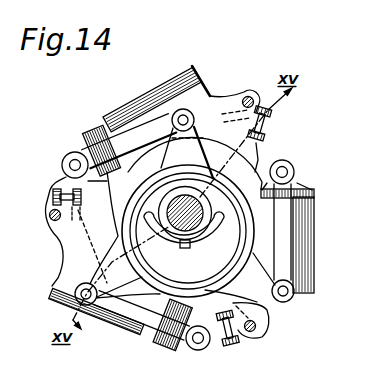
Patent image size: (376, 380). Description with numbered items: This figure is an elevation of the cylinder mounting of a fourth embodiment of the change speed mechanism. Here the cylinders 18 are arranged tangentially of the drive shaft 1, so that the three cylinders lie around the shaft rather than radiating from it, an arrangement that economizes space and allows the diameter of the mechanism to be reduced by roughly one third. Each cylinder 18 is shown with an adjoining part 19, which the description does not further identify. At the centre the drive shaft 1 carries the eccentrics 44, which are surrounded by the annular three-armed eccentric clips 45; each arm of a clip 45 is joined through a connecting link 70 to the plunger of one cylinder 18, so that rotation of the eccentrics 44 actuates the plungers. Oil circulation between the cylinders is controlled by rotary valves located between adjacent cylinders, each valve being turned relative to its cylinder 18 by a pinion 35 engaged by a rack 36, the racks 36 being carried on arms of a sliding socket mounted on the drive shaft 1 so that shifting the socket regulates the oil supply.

The drive shaft 1 is at (194, 218).
The cylinder 18 is at (122, 107).
The collar 19 is at (92, 135).
The pinion 35 is at (272, 119).
The rack 36 is at (249, 97).
The eccentric 44 is at (153, 197).
The annular three-armed eccentric clip 45 is at (121, 218).
The connecting link 70 is at (143, 138).